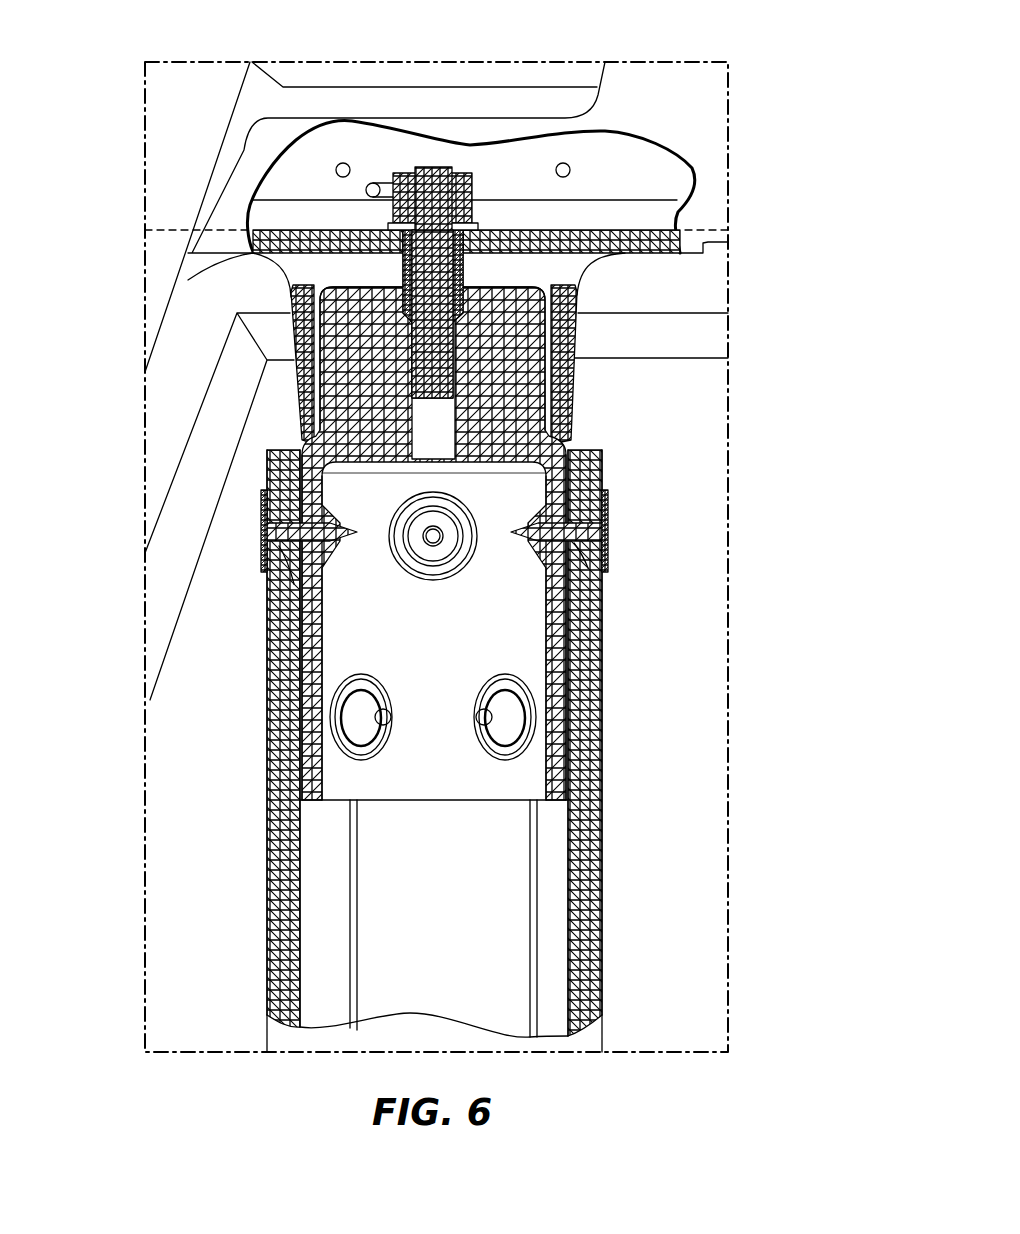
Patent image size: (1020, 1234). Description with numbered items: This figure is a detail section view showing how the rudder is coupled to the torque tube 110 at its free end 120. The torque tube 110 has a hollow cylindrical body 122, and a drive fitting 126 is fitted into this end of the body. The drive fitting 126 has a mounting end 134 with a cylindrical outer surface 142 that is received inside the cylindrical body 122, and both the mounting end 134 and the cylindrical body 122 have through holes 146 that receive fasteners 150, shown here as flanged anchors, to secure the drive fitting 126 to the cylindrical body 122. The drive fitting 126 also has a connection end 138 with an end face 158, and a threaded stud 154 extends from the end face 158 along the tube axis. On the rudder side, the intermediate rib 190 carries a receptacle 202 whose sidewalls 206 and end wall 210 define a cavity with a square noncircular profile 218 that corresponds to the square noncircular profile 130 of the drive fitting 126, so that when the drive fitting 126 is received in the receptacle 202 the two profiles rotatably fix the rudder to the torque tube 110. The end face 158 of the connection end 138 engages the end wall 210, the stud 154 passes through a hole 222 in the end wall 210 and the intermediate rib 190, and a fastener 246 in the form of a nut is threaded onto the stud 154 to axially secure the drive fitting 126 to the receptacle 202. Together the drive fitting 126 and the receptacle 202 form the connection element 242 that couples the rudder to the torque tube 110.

The torque tube 110 is at (580, 870).
The free end 120 is at (583, 467).
The cylindrical body 122 is at (578, 984).
The drive fitting 126 is at (448, 780).
The noncircular profile 130 is at (540, 346).
The mounting end 134 is at (580, 730).
The connection end 138 is at (345, 384).
The cylindrical outer surface 142 is at (290, 720).
The through holes 146 is at (285, 552).
The fasteners 150 is at (272, 532).
The stud 154 is at (447, 168).
The end face 158 is at (577, 300).
The intermediate rib 190 is at (317, 237).
The receptacle 202 is at (287, 292).
The sidewalls 206 is at (298, 334).
The end wall 210 is at (510, 258).
The noncircular profile 218 is at (560, 377).
The hole 222 is at (498, 248).
The connection element 242 is at (548, 225).
The fastener 246 is at (405, 198).